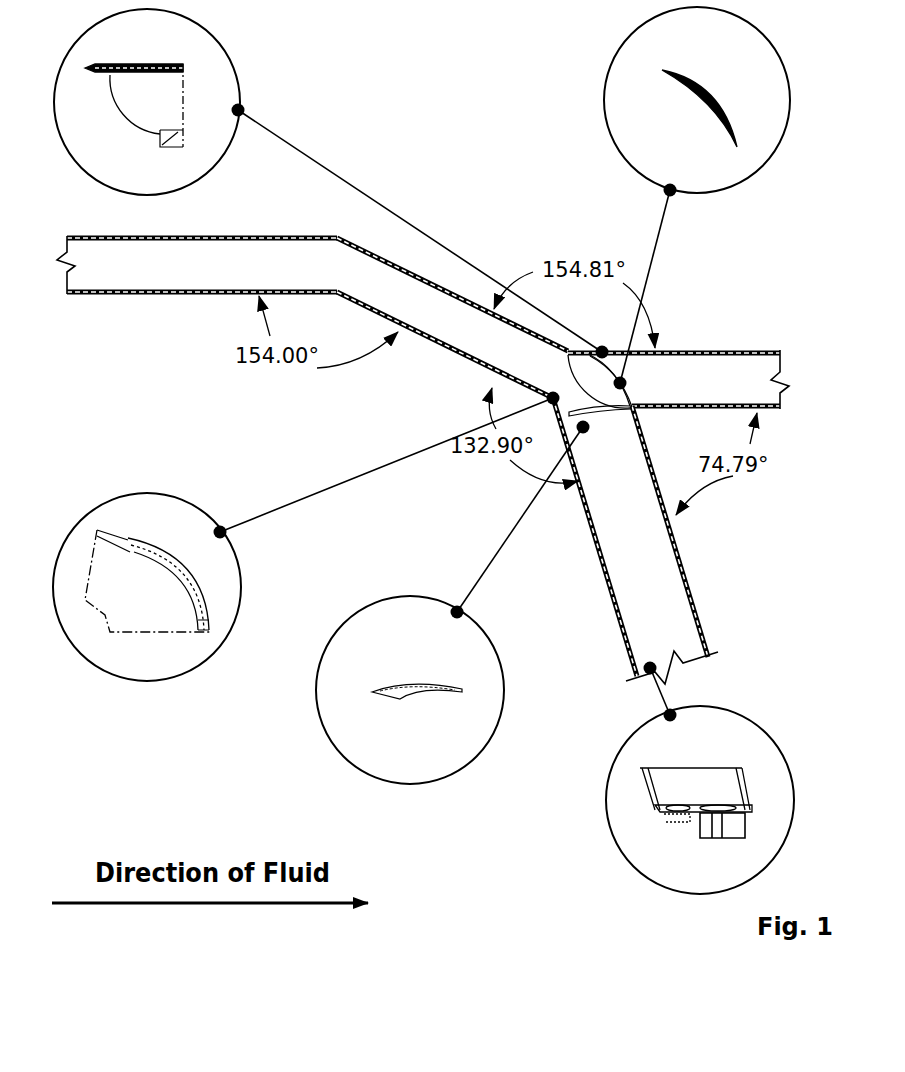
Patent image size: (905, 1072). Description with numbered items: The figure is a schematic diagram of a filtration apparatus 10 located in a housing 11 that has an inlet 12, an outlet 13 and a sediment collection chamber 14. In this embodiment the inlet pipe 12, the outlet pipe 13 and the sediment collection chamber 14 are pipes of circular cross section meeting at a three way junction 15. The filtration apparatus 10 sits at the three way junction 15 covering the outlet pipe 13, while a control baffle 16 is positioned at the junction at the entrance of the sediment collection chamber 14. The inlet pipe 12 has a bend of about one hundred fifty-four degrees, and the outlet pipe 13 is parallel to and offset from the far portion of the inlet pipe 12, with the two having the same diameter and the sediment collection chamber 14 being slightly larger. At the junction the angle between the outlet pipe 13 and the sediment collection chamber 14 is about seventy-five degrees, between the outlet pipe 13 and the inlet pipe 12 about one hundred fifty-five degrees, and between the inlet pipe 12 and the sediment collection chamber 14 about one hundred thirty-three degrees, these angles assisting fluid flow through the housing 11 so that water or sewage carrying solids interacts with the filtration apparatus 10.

The filtration apparatus 10 is at (749, 186).
The housing 11 is at (492, 198).
The inlet pipe 12 is at (112, 294).
The outlet pipe 13 is at (781, 416).
The sediment collection chamber 14 is at (625, 640).
The three way junction 15 is at (108, 678).
The control baffle 16 is at (334, 752).